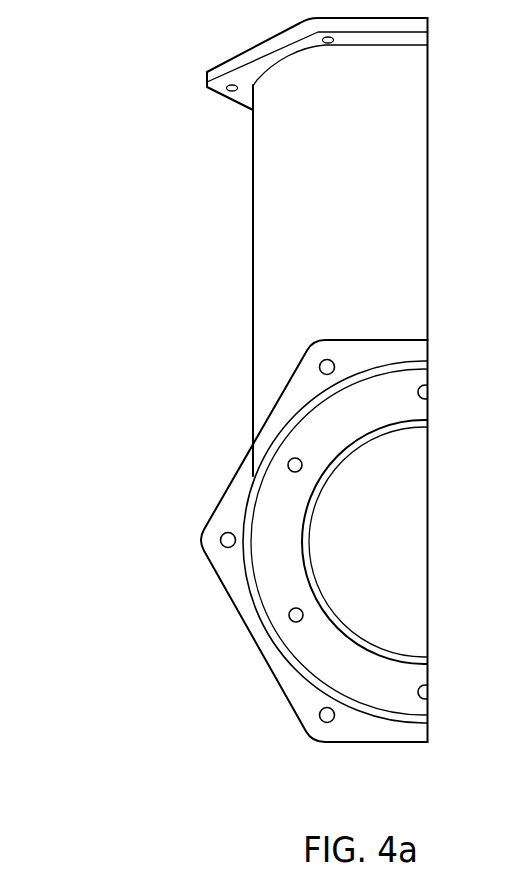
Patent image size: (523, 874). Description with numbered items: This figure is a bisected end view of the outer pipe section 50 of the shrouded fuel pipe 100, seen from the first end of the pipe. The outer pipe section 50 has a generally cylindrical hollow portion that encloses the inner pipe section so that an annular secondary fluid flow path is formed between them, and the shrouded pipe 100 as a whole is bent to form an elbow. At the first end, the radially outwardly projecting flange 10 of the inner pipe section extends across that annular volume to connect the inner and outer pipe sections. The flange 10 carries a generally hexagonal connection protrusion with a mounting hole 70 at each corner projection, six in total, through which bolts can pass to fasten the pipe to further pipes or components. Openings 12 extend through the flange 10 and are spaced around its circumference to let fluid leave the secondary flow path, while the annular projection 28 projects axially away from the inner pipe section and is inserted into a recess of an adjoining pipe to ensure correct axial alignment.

The shrouded fuel pipe 100 is at (133, 232).
The outer pipe section 50 is at (253, 258).
The outwardly projecting flange 10 is at (270, 508).
The openings 12 is at (298, 452).
The annular projection 28 is at (410, 428).
The mounting holes 70 is at (327, 359).